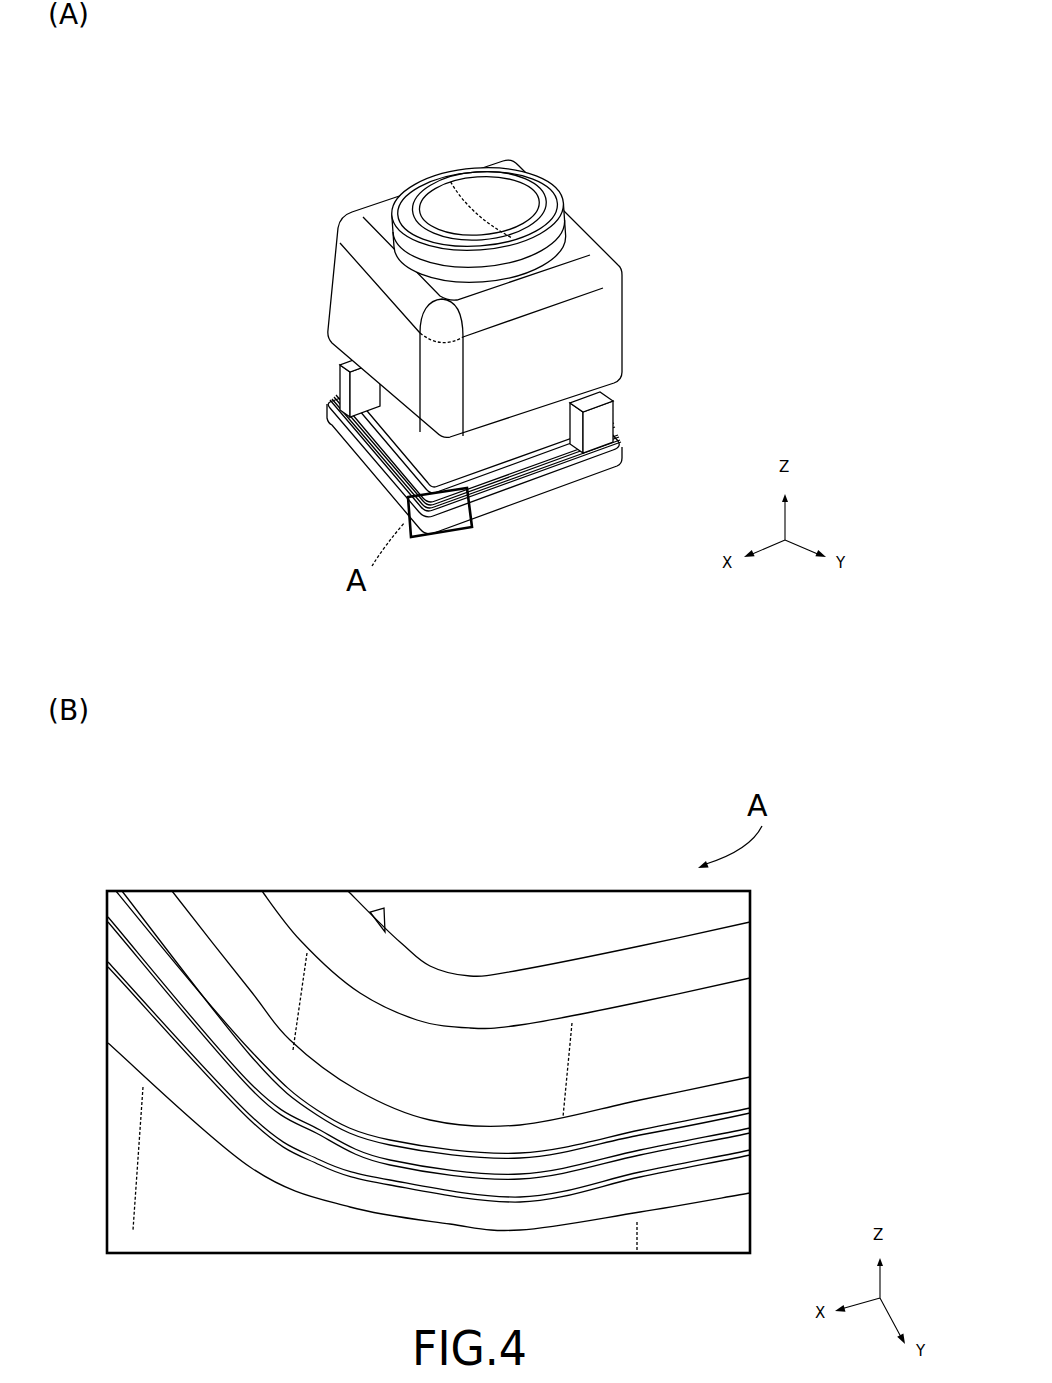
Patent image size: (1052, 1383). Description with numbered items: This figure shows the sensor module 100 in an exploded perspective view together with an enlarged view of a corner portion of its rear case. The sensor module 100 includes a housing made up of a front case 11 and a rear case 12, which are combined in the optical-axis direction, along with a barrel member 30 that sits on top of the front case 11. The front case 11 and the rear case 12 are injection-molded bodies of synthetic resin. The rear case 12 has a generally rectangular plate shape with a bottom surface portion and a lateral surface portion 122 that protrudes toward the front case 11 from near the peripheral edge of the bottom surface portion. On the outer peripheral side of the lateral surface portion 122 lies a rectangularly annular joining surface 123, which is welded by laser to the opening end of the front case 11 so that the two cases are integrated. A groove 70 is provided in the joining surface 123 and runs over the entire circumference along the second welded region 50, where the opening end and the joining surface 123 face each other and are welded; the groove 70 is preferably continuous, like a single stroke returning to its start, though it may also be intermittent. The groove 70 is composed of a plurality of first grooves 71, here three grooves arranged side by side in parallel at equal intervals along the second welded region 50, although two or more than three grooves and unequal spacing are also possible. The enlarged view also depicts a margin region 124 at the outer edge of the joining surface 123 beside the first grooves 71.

The sensor module 100 is at (646, 110).
The front case 11 is at (300, 281).
The barrel member 30 is at (502, 190).
The rear case 12 is at (314, 439).
The joining surface 123 is at (368, 478).
The groove 70 is at (535, 500).
The first grooves 71 is at (287, 1087).
The lateral surface portion 122 is at (583, 982).
The second welded region 50 is at (688, 1092).
The margin portion 124 is at (698, 1176).